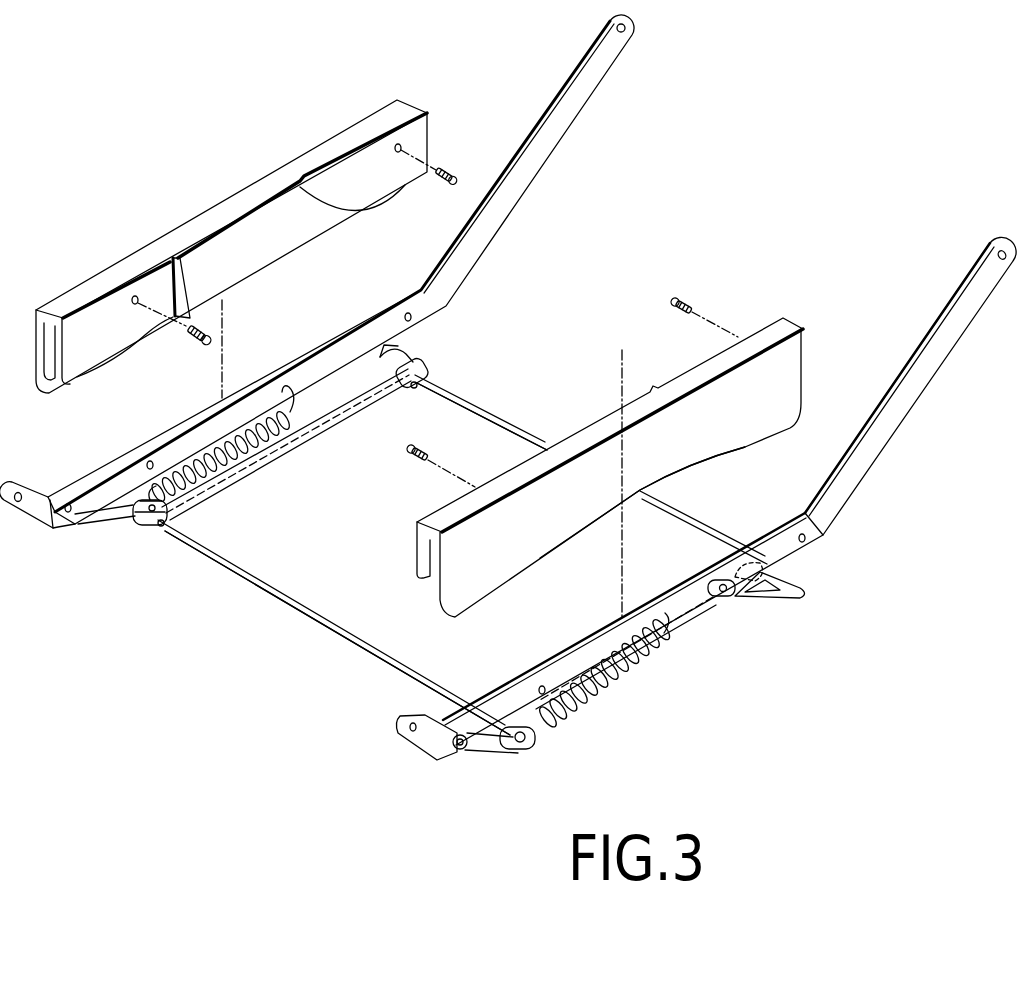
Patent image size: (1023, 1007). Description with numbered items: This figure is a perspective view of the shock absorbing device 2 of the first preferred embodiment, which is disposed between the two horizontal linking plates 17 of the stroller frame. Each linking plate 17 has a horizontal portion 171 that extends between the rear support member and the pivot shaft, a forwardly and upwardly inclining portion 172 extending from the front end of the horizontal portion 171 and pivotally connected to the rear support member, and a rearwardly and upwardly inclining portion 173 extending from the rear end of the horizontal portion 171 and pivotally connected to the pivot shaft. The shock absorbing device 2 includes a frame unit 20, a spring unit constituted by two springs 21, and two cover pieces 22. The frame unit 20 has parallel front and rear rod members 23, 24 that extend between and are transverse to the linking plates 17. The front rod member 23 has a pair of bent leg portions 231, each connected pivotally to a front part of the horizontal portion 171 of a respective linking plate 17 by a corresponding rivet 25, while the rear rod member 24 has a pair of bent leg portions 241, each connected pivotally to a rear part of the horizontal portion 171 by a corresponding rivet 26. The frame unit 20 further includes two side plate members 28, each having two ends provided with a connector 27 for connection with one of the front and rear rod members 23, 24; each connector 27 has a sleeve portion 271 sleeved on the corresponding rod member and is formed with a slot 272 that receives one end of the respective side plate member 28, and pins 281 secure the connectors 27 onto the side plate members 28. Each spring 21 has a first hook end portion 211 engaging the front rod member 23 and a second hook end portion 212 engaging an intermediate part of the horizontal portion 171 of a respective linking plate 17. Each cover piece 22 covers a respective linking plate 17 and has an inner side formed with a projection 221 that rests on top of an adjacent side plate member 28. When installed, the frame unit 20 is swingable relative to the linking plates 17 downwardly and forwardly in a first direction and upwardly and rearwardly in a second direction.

The shock absorbing device 2 is at (691, 654).
The linking plate 17 is at (477, 287).
The horizontal portion 171 is at (659, 610).
The forwardly and upwardly inclining portion 172 is at (428, 747).
The rearwardly and upwardly inclining portion 173 is at (903, 385).
The frame unit 20 is at (323, 622).
The spring 21 is at (222, 418).
The first hook end portion 211 is at (118, 488).
The second hook end portion 212 is at (296, 384).
The cover piece 22 is at (330, 150).
The projection 221 is at (237, 262).
The front rod member 23 is at (268, 592).
The bent leg portion 231 is at (108, 518).
The rear rod member 24 is at (476, 402).
The bent leg portion 241 is at (383, 348).
The rivet 25 is at (60, 497).
The rivet 26 is at (362, 354).
The connector 27 is at (421, 372).
The sleeve portion 271 is at (143, 500).
The slot 272 is at (152, 492).
The side plate member 28 is at (338, 417).
The pin 281 is at (413, 388).